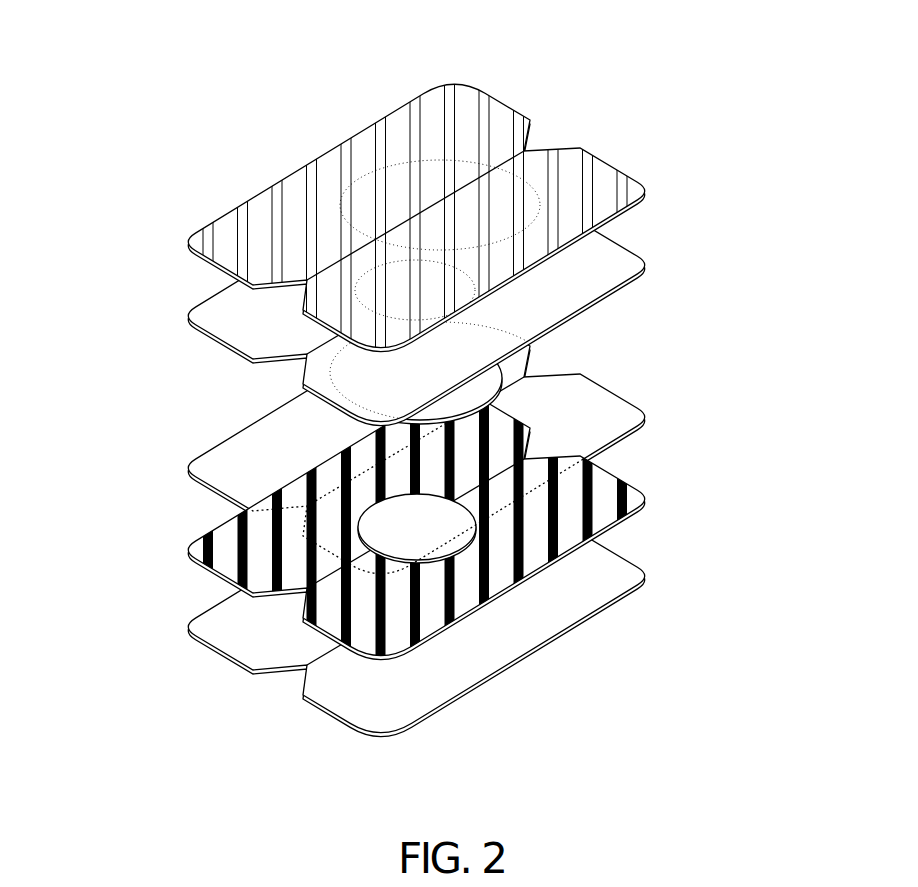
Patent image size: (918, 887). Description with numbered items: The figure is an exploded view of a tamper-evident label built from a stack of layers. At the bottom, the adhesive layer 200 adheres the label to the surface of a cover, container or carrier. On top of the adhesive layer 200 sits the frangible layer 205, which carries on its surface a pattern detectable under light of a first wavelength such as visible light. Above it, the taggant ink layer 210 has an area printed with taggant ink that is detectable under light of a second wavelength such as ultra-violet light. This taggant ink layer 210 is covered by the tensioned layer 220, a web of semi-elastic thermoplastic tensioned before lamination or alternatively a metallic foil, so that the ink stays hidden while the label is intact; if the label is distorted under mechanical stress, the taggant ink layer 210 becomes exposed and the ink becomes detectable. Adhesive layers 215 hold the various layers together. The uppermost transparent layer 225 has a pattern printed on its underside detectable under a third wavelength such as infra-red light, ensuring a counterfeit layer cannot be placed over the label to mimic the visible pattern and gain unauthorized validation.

The adhesive layer 200 is at (213, 654).
The frangible layer 205 is at (217, 574).
The taggant ink layer 210 is at (358, 532).
The adhesive layers 215 is at (418, 452).
The tensioned layer 220 is at (503, 373).
The transparent layer 225 is at (647, 202).